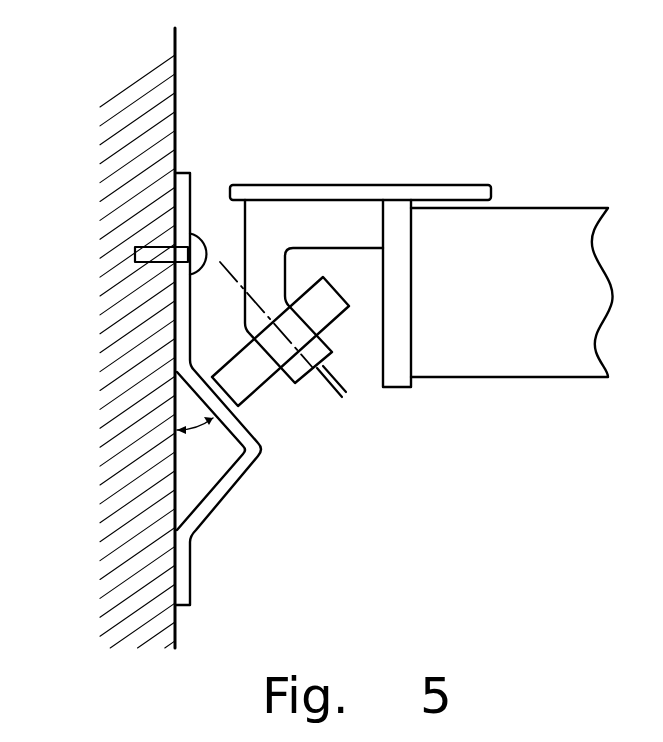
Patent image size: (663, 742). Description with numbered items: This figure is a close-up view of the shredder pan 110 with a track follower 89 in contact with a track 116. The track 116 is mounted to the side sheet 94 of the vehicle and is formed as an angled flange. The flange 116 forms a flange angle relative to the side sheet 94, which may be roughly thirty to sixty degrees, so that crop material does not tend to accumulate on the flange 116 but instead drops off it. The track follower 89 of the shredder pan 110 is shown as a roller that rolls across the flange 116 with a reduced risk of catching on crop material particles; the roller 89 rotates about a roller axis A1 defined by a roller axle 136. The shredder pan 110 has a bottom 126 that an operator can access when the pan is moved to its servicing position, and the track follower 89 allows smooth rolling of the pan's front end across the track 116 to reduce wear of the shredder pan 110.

The side sheet 94 is at (175, 137).
The track 116 is at (226, 440).
The shredder pan 110 is at (453, 178).
The track follower 89 is at (267, 387).
The roller axis A1 is at (256, 300).
The roller axle 136 is at (350, 388).
The bottom 126 is at (512, 378).